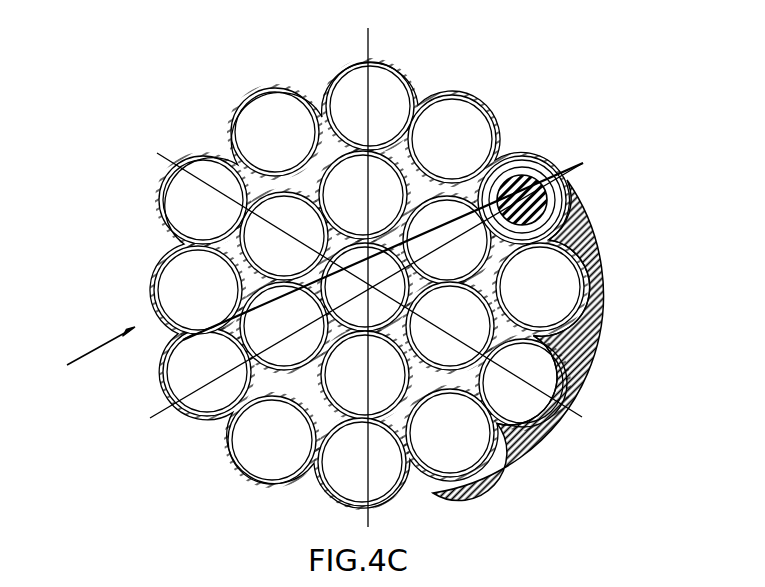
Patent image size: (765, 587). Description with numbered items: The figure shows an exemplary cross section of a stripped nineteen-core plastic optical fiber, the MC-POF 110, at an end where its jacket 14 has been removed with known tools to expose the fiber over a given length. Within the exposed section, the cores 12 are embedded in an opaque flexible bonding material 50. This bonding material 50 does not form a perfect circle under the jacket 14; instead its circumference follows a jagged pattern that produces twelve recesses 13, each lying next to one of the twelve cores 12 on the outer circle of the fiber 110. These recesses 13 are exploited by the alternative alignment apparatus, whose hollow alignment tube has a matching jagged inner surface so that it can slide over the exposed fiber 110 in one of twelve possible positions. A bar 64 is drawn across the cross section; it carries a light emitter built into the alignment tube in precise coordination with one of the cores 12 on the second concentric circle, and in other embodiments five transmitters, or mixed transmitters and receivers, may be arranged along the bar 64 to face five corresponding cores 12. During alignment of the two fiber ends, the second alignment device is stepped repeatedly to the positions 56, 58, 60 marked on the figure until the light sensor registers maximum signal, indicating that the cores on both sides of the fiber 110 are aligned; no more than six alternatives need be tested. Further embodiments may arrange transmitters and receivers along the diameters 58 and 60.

The cores 12 is at (530, 287).
The recesses 13 is at (478, 176).
The jacket 14 is at (598, 328).
The opaque flexible bonding material 50 is at (417, 387).
The position 56 is at (346, 302).
The position (diameter) 58 is at (347, 275).
The position (diameter) 60 is at (362, 263).
The bar 64 is at (210, 413).
The multi-core plastic optical fiber (MC-POF) 110 is at (80, 359).